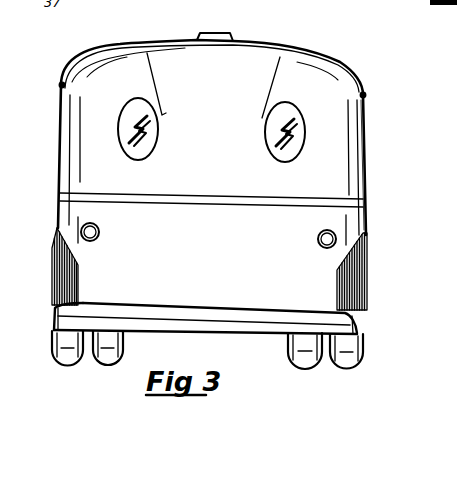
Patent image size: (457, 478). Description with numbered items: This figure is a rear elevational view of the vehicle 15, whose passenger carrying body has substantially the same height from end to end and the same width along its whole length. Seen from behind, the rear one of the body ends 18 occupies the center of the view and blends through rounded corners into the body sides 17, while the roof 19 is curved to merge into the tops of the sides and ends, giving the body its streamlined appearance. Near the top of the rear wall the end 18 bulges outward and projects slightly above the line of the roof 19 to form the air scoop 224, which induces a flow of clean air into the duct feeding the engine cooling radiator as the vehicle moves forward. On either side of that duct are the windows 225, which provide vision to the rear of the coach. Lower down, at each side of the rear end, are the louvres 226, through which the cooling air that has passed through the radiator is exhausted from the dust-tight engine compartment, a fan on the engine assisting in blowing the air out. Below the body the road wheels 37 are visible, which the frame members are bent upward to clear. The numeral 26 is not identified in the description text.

The vehicle 15 is at (355, 129).
The body sides 17 is at (60, 162).
The body ends 18 is at (230, 250).
The roof 19 is at (166, 41).
The left ventilating grille 26 is at (52, 279).
The road wheels 37 is at (124, 346).
The air scoop 224 is at (267, 57).
The windows 225 is at (132, 104).
The louvres 226 is at (366, 293).